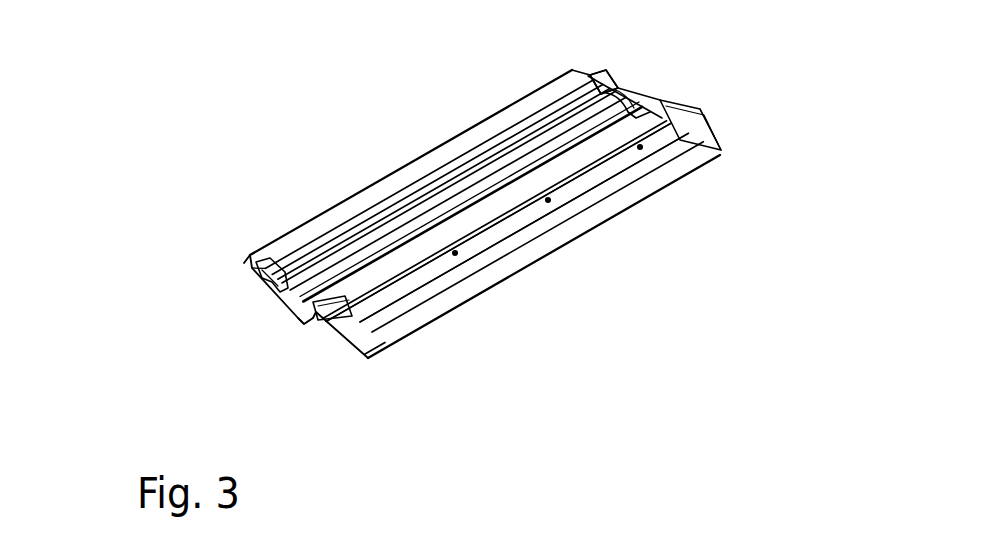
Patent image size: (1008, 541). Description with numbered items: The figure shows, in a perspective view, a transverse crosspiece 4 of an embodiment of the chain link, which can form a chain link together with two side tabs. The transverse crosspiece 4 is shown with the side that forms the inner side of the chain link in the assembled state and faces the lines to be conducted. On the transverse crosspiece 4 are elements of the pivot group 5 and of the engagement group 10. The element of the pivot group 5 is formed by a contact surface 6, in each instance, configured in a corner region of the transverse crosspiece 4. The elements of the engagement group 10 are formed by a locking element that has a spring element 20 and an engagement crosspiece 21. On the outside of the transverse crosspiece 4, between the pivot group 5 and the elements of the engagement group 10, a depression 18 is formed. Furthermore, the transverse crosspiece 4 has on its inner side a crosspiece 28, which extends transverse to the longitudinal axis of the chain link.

The transverse crosspiece 4 is at (158, 75).
The pivot group 5 is at (598, 63).
The contact surface 6 is at (431, 166).
The engagement group 10 is at (317, 352).
The depression 18 is at (258, 287).
The spring element 20 is at (310, 327).
The engagement crosspiece 21 is at (352, 322).
The crosspiece 28 is at (500, 213).